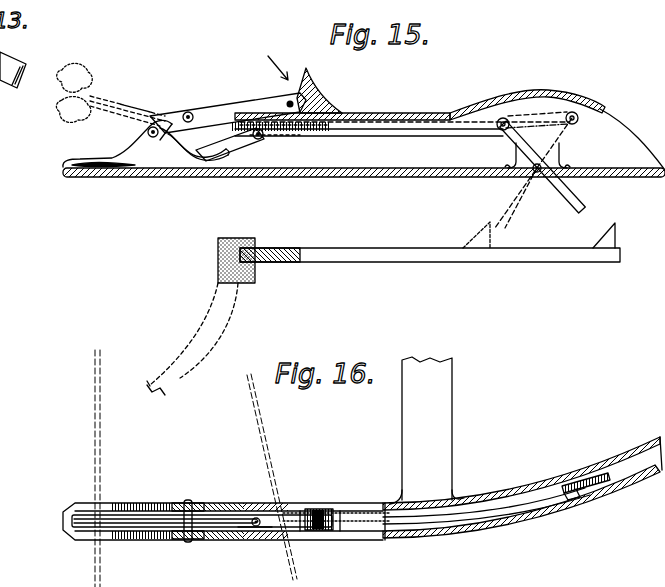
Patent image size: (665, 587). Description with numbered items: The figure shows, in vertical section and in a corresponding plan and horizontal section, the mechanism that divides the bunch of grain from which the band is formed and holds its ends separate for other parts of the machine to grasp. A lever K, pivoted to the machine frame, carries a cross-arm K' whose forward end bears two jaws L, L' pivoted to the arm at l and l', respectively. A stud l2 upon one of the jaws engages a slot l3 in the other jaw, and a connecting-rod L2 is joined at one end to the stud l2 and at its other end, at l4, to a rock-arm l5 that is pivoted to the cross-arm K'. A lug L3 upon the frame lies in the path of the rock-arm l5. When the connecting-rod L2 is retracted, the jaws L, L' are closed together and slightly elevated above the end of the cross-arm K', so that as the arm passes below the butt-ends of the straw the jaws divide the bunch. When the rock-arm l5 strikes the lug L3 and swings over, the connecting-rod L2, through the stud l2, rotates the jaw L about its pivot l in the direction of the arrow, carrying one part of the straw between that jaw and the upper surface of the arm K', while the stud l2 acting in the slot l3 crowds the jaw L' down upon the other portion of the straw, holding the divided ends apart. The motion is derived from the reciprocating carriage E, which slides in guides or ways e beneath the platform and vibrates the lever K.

In FIG. 15, the pivot of jaw L l is at (192, 99).
In FIG. 16, the pivot of jaw L l is at (188, 506).
In FIG. 15, the pivot of jaw L' l' is at (241, 144).
In FIG. 16, the pivot of jaw L' l' is at (251, 544).
In FIG. 15, the stud l2 is at (148, 133).
In FIG. 15, the slot l3 is at (211, 152).
In FIG. 15, the pivotal connection of connecting-rod to rock-arm l4 is at (510, 119).
In FIG. 16, the pivotal connection of connecting-rod to rock-arm l4 is at (572, 500).
In FIG. 15, the rock-arm l5 is at (572, 194).
In FIG. 16, the rock-arm l5 is at (590, 475).
In FIG. 15, the jaw L is at (228, 99).
In FIG. 16, the jaw L is at (202, 500).
In FIG. 15, the jaw L' is at (117, 162).
In FIG. 16, the jaw L' is at (158, 543).
In FIG. 15, the connecting-rod L2 is at (366, 128).
In FIG. 16, the connecting-rod L2 is at (269, 500).
In FIG. 15, the lug L3 is at (618, 245).
In FIG. 16, the lever K is at (427, 430).
In FIG. 15, the cross-arm K' is at (364, 186).
In FIG. 16, the cross-arm K' is at (522, 487).
In FIG. 15, the carriage E is at (216, 279).
In FIG. 15, the guides or ways e is at (259, 262).